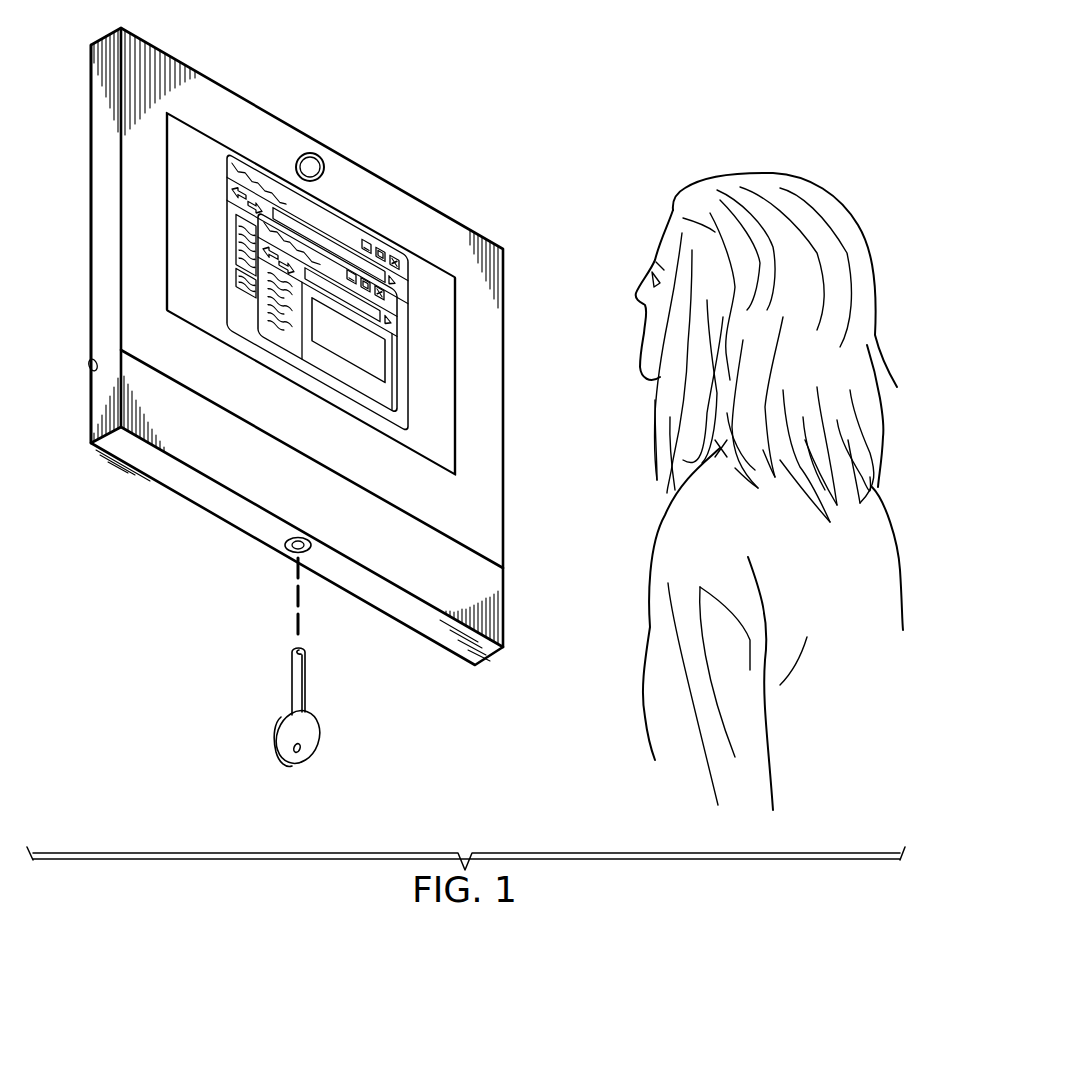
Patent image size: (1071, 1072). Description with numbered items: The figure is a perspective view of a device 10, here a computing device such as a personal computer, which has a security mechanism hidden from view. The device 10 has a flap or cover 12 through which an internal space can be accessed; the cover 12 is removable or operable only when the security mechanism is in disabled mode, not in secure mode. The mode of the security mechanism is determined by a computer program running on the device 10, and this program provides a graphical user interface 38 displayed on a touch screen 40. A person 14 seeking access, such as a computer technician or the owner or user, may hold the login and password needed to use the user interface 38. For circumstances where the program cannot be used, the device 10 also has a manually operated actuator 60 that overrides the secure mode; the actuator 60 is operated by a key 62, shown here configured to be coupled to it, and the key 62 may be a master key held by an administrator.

The device 10 is at (586, 86).
The flap or cover 12 is at (147, 462).
The person 14 is at (822, 186).
The graphical user interface 38 is at (348, 340).
The touch screen 40 is at (418, 276).
The manually operated actuator 60 is at (293, 557).
The key 62 is at (275, 746).